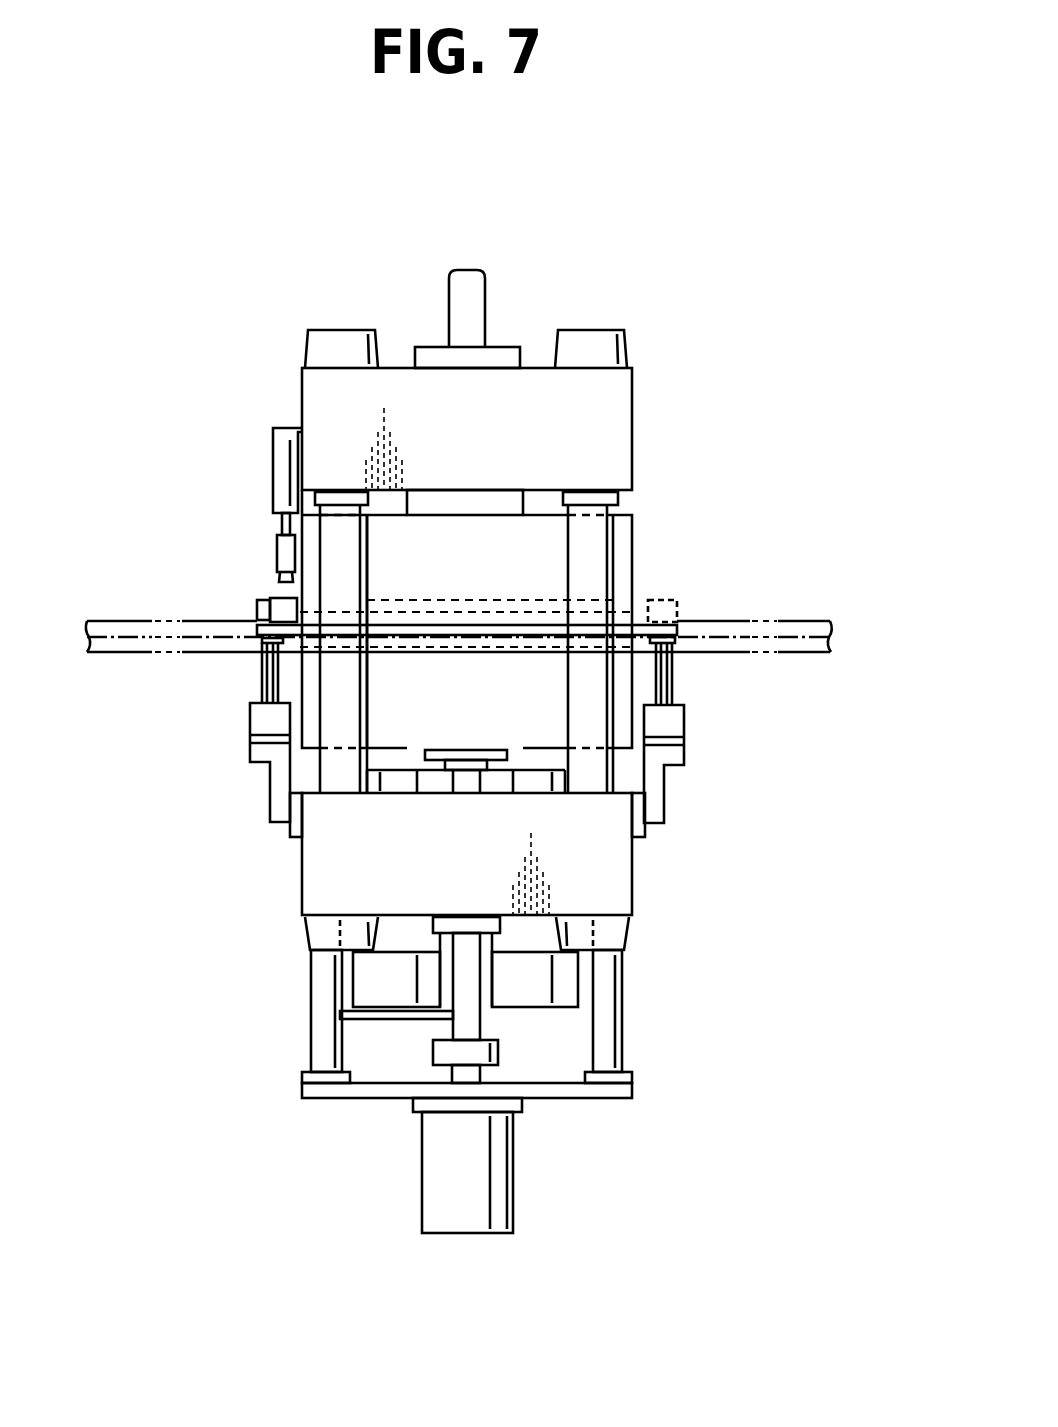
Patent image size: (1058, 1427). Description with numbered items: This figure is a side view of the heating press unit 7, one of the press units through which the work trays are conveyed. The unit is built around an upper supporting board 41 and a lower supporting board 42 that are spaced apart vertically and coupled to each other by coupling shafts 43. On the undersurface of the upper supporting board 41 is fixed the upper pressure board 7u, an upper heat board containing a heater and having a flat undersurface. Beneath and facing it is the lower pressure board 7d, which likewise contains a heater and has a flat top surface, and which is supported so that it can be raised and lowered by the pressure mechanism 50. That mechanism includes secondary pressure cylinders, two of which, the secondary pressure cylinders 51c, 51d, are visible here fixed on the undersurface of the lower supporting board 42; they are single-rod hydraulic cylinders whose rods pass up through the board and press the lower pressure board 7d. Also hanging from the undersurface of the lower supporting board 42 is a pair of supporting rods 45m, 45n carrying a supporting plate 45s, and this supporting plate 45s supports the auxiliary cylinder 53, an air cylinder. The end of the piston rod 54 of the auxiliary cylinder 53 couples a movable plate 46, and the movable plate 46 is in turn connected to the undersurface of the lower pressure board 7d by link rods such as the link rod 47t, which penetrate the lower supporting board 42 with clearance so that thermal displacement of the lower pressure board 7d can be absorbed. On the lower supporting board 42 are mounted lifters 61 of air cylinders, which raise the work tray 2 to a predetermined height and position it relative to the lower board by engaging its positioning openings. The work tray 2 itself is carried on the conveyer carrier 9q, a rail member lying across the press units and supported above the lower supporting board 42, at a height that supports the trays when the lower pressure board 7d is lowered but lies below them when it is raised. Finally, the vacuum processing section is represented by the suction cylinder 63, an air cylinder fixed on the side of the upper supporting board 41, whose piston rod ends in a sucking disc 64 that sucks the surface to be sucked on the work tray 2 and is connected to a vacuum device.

The heating press unit 7 is at (619, 256).
The upper supporting board 41 is at (633, 393).
The upper pressure board 7u is at (633, 538).
The work tray 2 is at (690, 594).
The conveyer carrier 9q is at (812, 620).
The suction cylinder 63 is at (272, 465).
The sucking disc 64 is at (277, 576).
The lower pressure board 7d is at (300, 690).
The lifter 61 is at (232, 722).
The coupling shaft 43 is at (320, 770).
The lower supporting board 42 is at (633, 875).
The pressure mechanism 50 is at (248, 1125).
The secondary pressure cylinder 51c is at (357, 980).
The secondary pressure cylinder 51d is at (578, 985).
The link rod 47t is at (432, 1020).
The supporting rod 45m is at (310, 1052).
The supporting rod 45n is at (623, 1050).
The supporting plate 45s is at (590, 1100).
The movable plate 46 is at (433, 1052).
The piston rod 54 is at (500, 1082).
The auxiliary cylinder 53 is at (485, 1233).